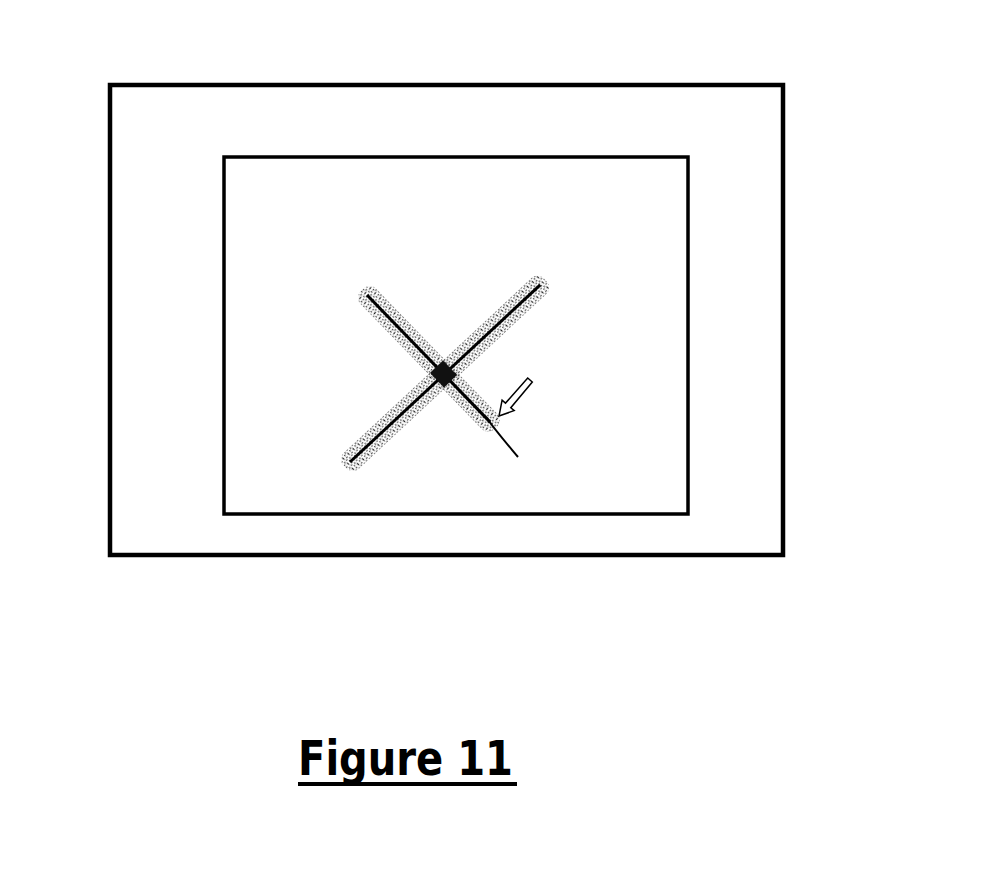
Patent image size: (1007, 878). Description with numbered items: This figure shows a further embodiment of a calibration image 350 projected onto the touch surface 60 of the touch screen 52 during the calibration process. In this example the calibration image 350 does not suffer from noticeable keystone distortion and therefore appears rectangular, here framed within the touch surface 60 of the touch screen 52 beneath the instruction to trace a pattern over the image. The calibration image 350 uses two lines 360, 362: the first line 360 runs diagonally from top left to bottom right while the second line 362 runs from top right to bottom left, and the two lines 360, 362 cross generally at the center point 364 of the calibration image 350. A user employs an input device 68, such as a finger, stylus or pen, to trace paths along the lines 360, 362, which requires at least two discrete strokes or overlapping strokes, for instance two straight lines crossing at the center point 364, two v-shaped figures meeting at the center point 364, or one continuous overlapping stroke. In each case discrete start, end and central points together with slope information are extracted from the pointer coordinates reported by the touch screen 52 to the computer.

The touch screen 52 is at (136, 80).
The touch surface 60 is at (280, 112).
The calibration image 350 is at (712, 318).
The line 360 is at (377, 308).
The line 362 is at (373, 443).
The center point 364 is at (435, 373).
The input device 68 is at (522, 398).